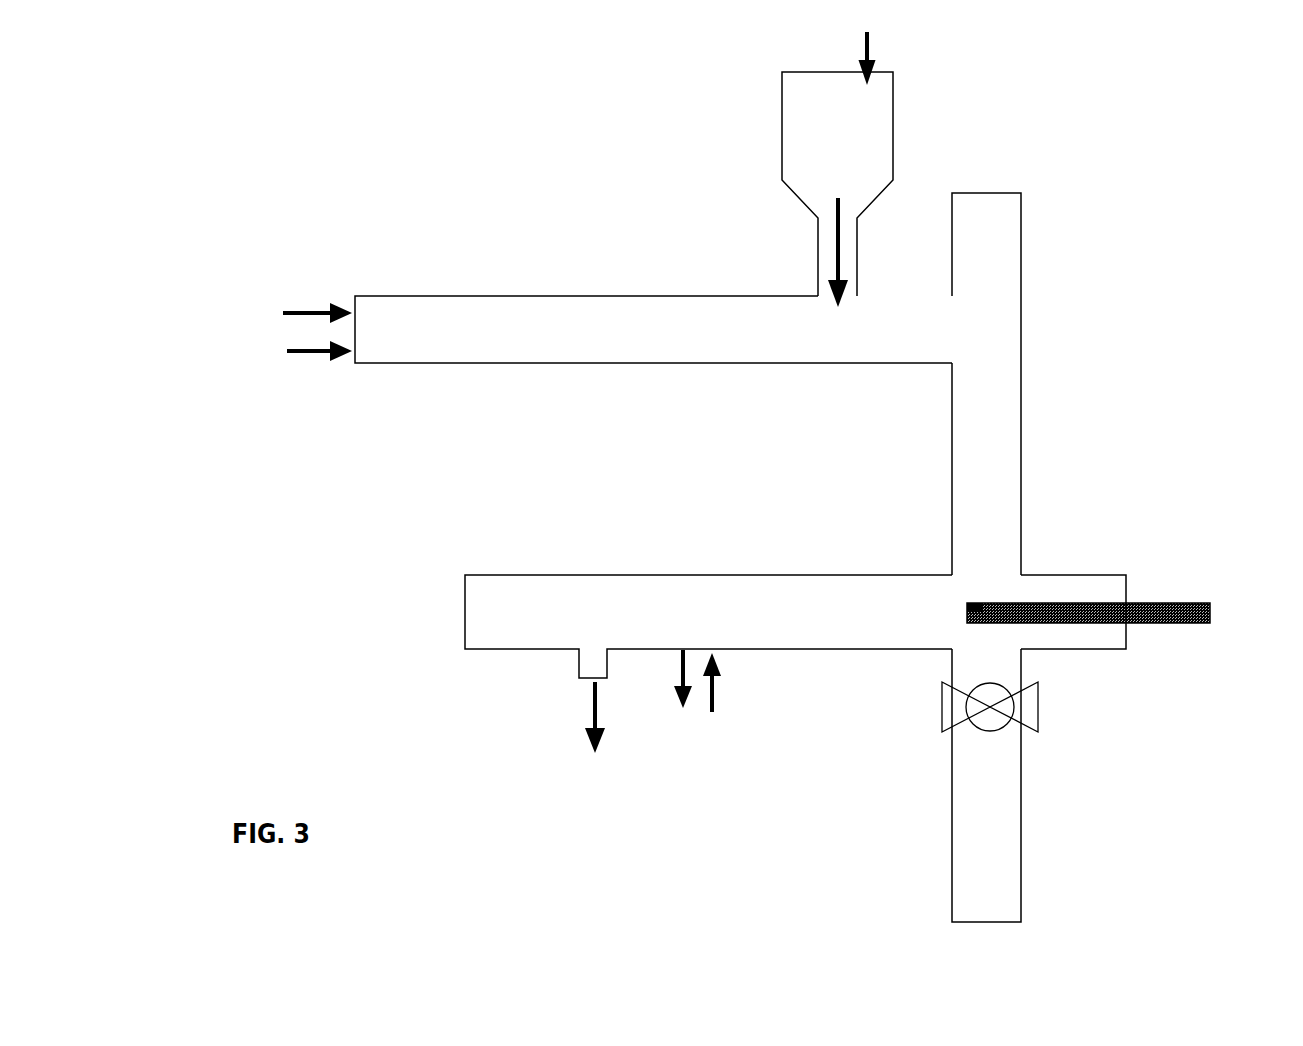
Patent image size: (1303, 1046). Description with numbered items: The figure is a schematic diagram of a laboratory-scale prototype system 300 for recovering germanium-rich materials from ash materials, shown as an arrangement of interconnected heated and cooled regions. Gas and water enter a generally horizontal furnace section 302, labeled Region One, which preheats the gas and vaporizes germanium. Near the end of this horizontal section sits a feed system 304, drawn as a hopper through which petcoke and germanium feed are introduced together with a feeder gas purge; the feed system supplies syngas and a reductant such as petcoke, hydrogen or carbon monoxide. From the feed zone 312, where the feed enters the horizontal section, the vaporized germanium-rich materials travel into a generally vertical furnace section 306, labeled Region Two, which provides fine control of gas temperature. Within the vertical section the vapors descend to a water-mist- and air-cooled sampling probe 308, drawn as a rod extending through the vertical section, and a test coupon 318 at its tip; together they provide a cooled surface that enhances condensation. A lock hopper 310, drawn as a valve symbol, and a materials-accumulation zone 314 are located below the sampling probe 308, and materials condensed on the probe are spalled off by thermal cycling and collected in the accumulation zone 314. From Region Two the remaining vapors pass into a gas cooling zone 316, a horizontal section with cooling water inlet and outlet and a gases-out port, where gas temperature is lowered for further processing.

The laboratory-scale prototype system 300 is at (241, 153).
The horizontal furnace section 302 is at (650, 296).
The feed system 304 is at (795, 172).
The vertical furnace section 306 is at (1023, 357).
The sampling probe 308 is at (1180, 603).
The lock hopper 310 is at (1043, 713).
The feed zone 312 is at (847, 363).
The materials-accumulation zone 314 is at (1021, 842).
The gas cooling zone 316 is at (650, 575).
The test coupon 318 is at (982, 605).